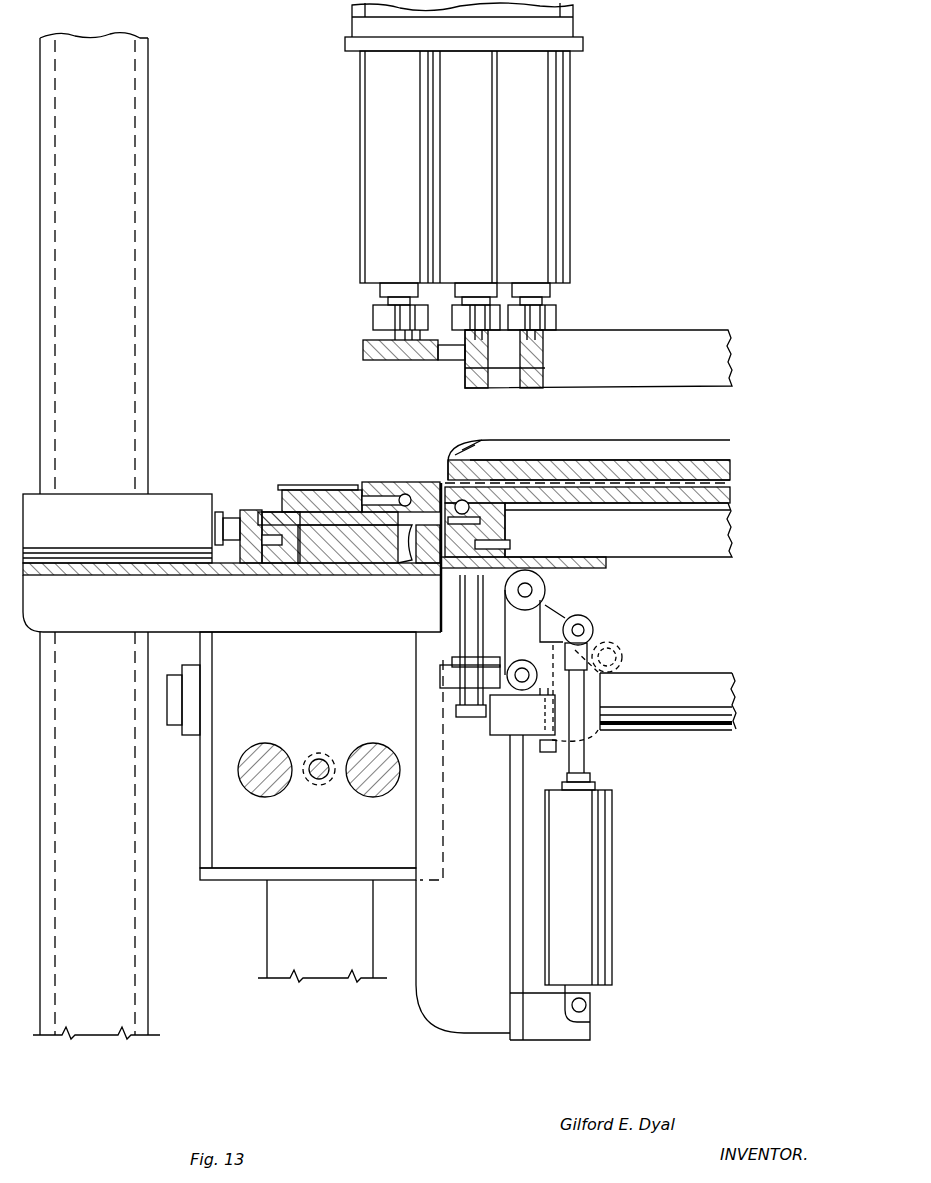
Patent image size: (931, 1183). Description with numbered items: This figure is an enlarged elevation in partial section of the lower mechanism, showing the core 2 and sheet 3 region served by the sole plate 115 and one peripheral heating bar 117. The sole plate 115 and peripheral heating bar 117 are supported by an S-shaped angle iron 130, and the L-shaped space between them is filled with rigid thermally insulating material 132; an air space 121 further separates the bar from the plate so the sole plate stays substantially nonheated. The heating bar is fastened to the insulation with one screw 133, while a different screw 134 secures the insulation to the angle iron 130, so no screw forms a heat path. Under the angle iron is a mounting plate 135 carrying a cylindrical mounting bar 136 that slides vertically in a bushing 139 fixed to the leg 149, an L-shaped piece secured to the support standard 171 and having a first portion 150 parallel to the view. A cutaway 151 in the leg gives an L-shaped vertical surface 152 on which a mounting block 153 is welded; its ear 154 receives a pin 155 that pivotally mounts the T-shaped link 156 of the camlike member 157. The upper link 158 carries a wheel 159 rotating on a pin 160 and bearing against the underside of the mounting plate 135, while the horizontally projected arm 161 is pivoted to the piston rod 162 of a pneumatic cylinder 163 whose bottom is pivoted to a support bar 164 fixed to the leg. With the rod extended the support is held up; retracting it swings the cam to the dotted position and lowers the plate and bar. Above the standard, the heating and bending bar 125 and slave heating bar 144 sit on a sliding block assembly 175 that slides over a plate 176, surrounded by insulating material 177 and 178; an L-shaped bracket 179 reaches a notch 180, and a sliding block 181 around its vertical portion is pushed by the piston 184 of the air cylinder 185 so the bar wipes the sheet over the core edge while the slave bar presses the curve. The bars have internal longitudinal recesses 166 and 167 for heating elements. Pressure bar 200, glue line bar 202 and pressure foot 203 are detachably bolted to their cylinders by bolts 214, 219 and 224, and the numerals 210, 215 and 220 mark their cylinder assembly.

The core 2 is at (480, 448).
The sheet 3 is at (398, 500).
The sole plate 115 is at (618, 494).
The peripheral heating bar 117 is at (452, 500).
The air space 121 is at (515, 470).
The heating and bending bar 125 is at (376, 492).
The angle iron 130 is at (505, 521).
The thermally insulating material 132 is at (618, 530).
The screw 133 is at (416, 500).
The screw 134 is at (510, 545).
The mounting plate 135 is at (610, 568).
The cylindrical mounting bar 136 is at (470, 598).
The bushing 139 is at (452, 662).
The slave heating bar 144 is at (425, 515).
The leg 149 is at (440, 1005).
The first portion 150 is at (488, 840).
The cutaway 151 is at (530, 740).
The L-shaped vertical surface 152 is at (495, 740).
The mounting block 153 is at (582, 740).
The ear 154 is at (522, 711).
The pin 155 is at (505, 675).
The T-shaped link 156 is at (503, 683).
The camlike member 157 is at (594, 628).
The upper link 158 is at (572, 612).
The wheel 159 is at (546, 583).
The pin 160 is at (532, 597).
The horizontally projected arm 161 is at (590, 620).
The piston rod 162 is at (584, 760).
The pneumatic cylinder 163 is at (595, 826).
The support bar 164 is at (555, 1035).
The internal longitudinal recess 166 is at (398, 400).
The internal longitudinal recess 167 is at (540, 485).
The support standard 171 is at (330, 840).
The sliding block assembly 175 is at (286, 478).
The plate 176 is at (228, 578).
The insulating material 177 is at (323, 490).
The insulating material 178 is at (352, 578).
The L-shaped bracket 179 is at (331, 520).
The notch 180 is at (272, 512).
The sliding block 181 is at (250, 515).
The piston 184 is at (225, 515).
The air cylinder 185 is at (91, 505).
The pressure bar 200 is at (363, 348).
The glue line bar 202 is at (468, 380).
The pressure foot 203 is at (540, 373).
The cylinder 210 is at (530, 158).
The bolt 214 is at (545, 306).
The cylinder 215 is at (470, 121).
The bolt 219 is at (483, 297).
The cylinder 220 is at (370, 118).
The bolt 224 is at (392, 300).